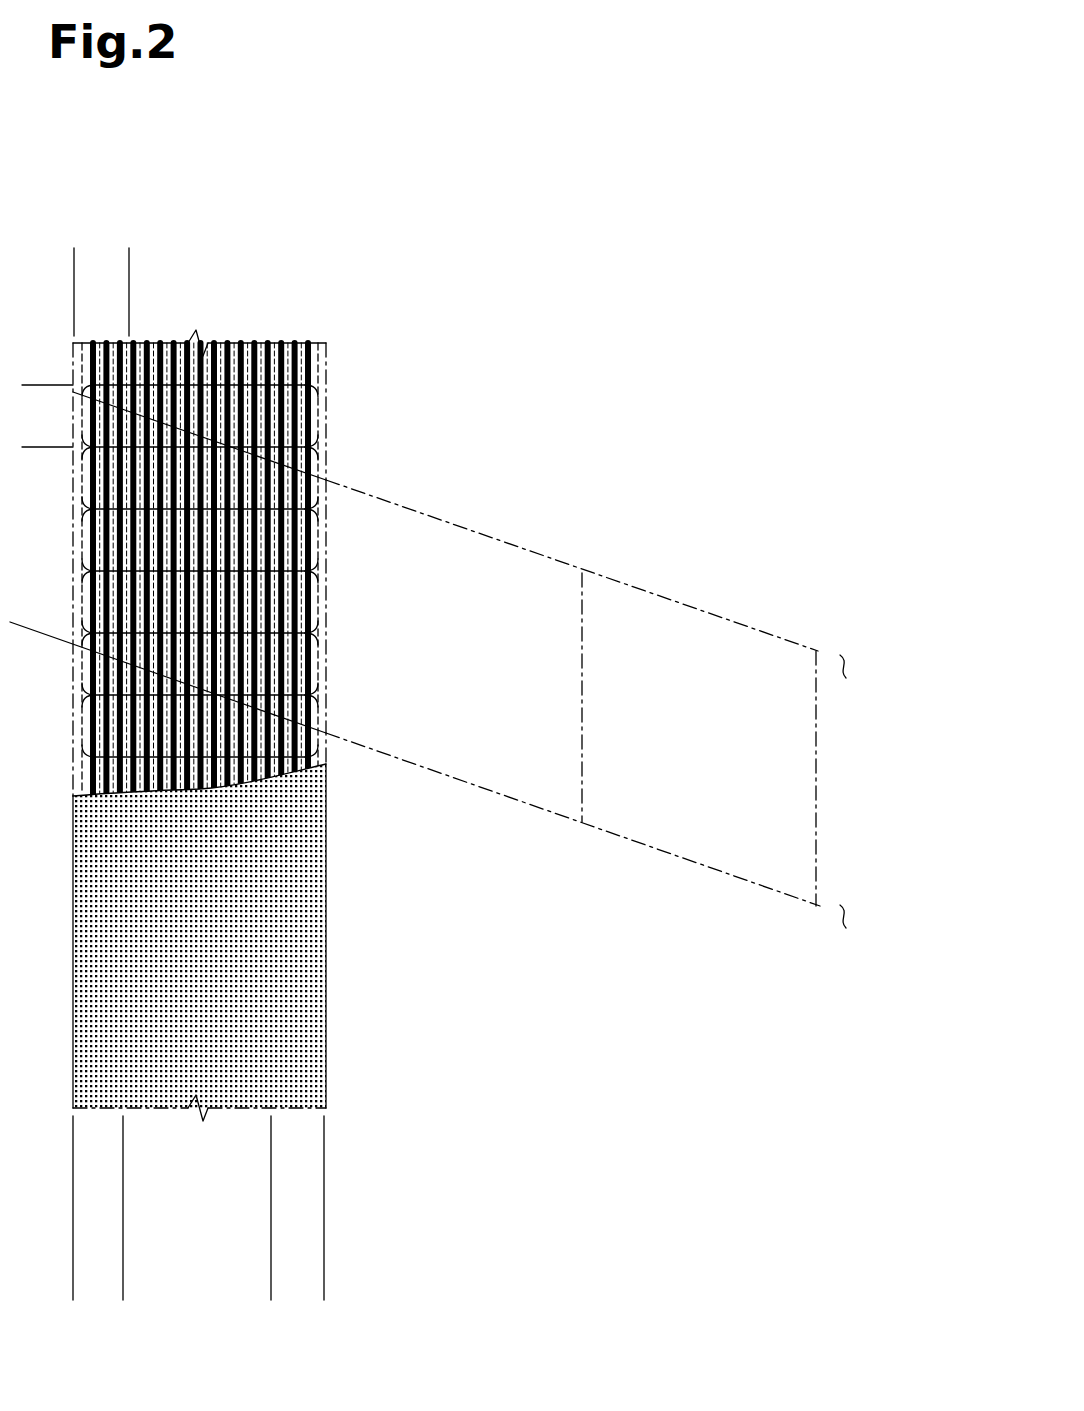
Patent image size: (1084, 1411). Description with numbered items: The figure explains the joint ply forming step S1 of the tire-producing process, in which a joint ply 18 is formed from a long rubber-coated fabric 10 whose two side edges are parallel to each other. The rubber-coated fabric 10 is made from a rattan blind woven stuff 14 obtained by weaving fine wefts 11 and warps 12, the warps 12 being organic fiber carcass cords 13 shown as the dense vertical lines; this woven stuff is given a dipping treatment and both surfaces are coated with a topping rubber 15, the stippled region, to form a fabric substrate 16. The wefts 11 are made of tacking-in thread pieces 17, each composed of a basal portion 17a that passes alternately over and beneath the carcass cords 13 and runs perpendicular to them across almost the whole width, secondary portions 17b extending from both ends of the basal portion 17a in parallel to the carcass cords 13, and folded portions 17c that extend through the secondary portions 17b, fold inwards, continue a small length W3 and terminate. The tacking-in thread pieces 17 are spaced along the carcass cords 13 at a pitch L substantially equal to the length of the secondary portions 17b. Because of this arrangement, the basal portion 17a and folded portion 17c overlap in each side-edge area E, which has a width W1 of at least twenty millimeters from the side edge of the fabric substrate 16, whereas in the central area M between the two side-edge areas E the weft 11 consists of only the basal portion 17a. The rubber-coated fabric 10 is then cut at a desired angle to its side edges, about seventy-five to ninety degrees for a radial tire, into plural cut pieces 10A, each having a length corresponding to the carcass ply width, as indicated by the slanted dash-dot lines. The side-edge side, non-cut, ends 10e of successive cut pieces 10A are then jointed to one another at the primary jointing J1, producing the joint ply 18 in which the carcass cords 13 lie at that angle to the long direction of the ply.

The rubber-coated fabric 10 is at (319, 942).
The cut pieces 10A is at (522, 808).
The side-edge side ends 10e is at (582, 600).
The wefts 11 is at (329, 506).
The warps 12 is at (293, 345).
The carcass cords 13 is at (229, 506).
The rattan blind woven stuff 14 is at (326, 797).
The topping rubber 15 is at (312, 955).
The fabric substrate 16 is at (319, 942).
The tacking-in thread pieces 17 is at (334, 557).
The basal portion 17a is at (320, 400).
The secondary portions 17b is at (320, 408).
The folded portions 17c is at (320, 428).
The joint ply 18 is at (723, 583).
The primary jointing J1 is at (660, 506).
The joint ply forming step S1 is at (596, 365).
The width of side-edge area W1 is at (324, 1200).
The length of folded portions W3 is at (129, 254).
The pitch L is at (30, 385).
The side-edge area E is at (123, 1300).
The central area M is at (271, 1300).